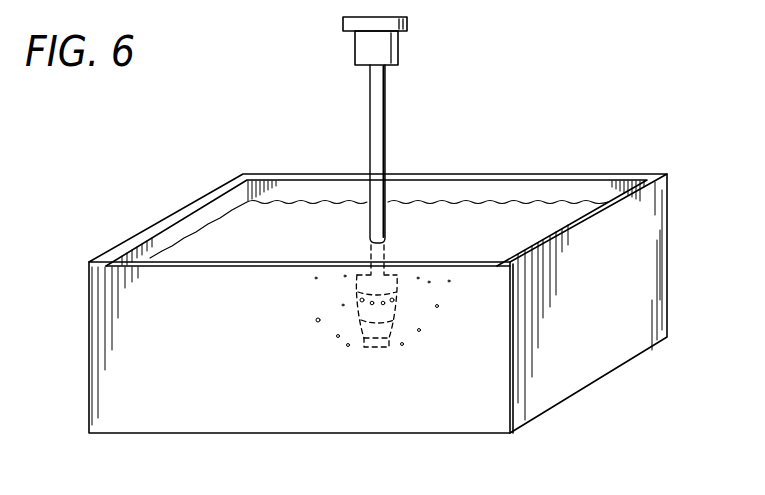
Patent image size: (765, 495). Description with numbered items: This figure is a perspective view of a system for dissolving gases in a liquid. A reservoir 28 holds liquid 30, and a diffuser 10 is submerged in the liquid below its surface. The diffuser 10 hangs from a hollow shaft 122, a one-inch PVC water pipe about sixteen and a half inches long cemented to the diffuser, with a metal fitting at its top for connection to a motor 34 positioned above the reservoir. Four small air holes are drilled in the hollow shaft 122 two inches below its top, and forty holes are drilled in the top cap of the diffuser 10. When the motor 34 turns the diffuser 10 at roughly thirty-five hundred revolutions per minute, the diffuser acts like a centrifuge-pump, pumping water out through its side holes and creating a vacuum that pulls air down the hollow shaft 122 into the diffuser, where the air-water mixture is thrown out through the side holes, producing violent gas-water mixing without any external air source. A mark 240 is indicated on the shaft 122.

The diffuser 10 is at (358, 273).
The reservoir 28 is at (613, 173).
The liquid 30 is at (515, 228).
The motor 34 is at (400, 48).
The hollow shaft 122 is at (385, 136).
The mark 240 is at (333, 97).